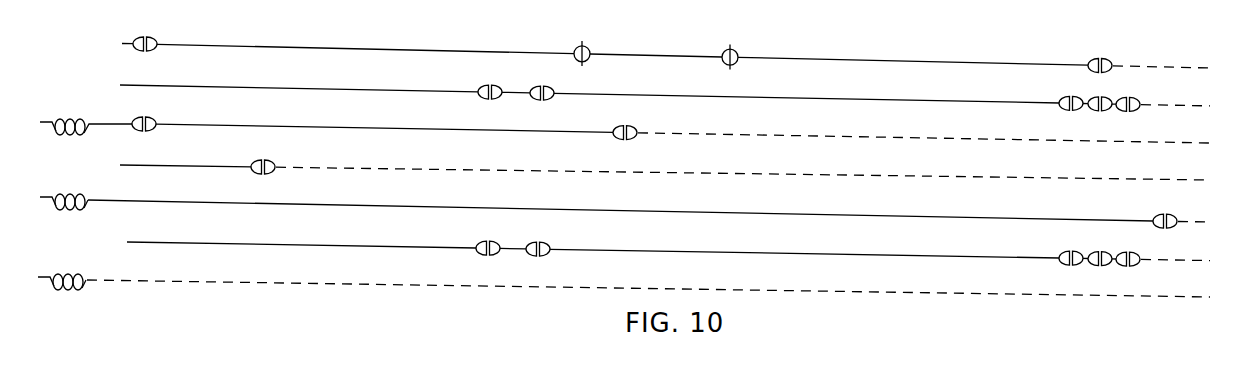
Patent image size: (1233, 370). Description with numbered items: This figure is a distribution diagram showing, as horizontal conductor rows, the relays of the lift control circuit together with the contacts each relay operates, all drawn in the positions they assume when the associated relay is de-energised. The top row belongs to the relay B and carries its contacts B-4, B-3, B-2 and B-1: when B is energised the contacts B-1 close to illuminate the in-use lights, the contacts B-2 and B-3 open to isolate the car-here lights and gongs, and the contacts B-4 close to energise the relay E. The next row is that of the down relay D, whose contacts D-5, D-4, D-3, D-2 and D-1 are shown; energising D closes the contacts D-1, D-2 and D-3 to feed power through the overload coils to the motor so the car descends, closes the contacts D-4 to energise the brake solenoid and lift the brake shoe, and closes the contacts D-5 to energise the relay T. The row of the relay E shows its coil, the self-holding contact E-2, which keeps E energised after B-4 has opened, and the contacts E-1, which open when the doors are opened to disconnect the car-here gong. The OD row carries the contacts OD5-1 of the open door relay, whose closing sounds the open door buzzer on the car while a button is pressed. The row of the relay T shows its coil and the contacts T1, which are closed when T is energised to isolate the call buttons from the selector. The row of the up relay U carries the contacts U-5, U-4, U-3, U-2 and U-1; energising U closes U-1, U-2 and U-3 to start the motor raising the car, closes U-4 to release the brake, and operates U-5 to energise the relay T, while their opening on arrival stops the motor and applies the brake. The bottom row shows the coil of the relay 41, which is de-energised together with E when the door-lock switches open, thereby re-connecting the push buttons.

The relay B is at (674, 60).
The contacts B-4 is at (145, 35).
The contacts B-3 is at (582, 46).
The contacts B-2 is at (729, 51).
The contacts B-1 is at (1099, 57).
The down relay D is at (674, 99).
The contacts D-5 is at (490, 84).
The contacts D-4 is at (542, 84).
The contacts D-3 is at (1070, 96).
The contacts D-2 is at (1100, 96).
The contacts D-1 is at (1128, 96).
The relay E is at (633, 125).
The self-holding contact E-2 is at (144, 119).
The contacts E-1 is at (624, 126).
The open door relay line OD is at (675, 176).
The contacts ODS-1 OD5-1 is at (265, 160).
The relay T is at (633, 203).
The contacts T-1 T1 is at (1165, 214).
The up relay U is at (676, 254).
The contacts U-5 is at (488, 240).
The contacts U-4 is at (538, 240).
The contacts U-3 is at (1068, 250).
The contacts U-2 is at (1100, 251).
The contacts U-1 is at (1128, 251).
The relay 41 is at (633, 279).